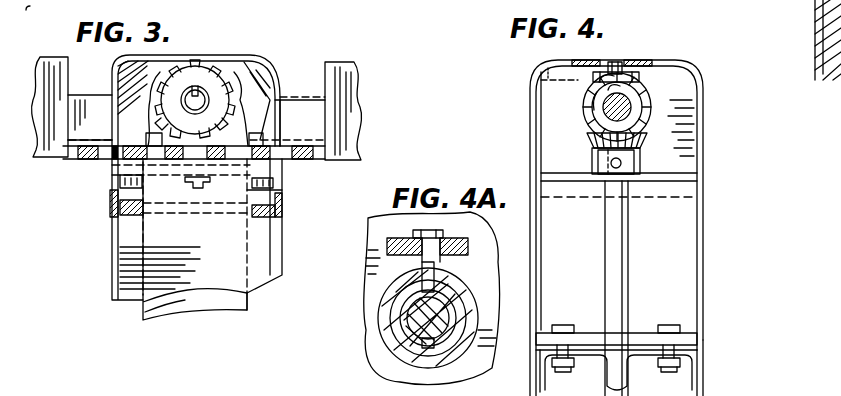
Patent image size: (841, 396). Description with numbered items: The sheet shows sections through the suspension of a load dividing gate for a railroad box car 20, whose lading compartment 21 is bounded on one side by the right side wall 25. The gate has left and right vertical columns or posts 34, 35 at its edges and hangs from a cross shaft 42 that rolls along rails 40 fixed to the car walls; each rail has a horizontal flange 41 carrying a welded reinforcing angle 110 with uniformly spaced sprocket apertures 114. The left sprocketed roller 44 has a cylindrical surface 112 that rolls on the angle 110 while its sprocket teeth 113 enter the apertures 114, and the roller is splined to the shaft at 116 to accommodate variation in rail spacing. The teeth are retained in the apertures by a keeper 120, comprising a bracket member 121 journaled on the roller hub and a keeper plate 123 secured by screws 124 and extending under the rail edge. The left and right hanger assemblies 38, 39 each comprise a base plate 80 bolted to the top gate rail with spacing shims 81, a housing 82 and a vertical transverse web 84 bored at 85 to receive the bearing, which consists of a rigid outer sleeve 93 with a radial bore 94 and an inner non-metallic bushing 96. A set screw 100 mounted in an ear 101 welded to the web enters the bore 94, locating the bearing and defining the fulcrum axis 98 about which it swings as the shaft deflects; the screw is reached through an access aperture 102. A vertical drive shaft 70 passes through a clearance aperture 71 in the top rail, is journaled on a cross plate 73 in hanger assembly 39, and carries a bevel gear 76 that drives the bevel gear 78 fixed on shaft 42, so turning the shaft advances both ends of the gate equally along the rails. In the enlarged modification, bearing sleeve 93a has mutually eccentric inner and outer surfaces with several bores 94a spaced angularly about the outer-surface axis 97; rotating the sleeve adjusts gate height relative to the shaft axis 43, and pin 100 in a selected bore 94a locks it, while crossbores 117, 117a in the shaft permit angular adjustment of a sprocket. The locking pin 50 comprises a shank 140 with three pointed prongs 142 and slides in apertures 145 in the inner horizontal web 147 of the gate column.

In FIG. 3, the railroad box car 20 is at (37, 15).
In FIG. 4, the lading compartment 21 is at (800, 56).
In FIG. 4, the right side wall 25 is at (813, 40).
In FIG. 3, the left vertical column 34 is at (284, 262).
In FIG. 4, the right vertical column 35 is at (714, 392).
In FIG. 3, the left hanger assembly 38 is at (286, 186).
In FIG. 4, the right hanger assembly 39 is at (711, 296).
In FIG. 3, the rail 40 is at (318, 166).
In FIG. 3, the horizontal flange 41 is at (302, 142).
In FIG. 3, the cross shaft 42 is at (199, 92).
In FIG. 4A, the cross shaft 42 is at (416, 346).
In FIG. 4, the cross shaft 42 is at (606, 112).
In FIG. 4A, the shaft axis 43 is at (408, 350).
In FIG. 3, the left sprocketed roller 44 is at (197, 86).
In FIG. 3, the locking pin 50 is at (252, 300).
In FIG. 4, the vertical drive shaft 70 is at (628, 274).
In FIG. 4, the clearance aperture 71 is at (606, 370).
In FIG. 4, the cross plate 73 is at (656, 184).
In FIG. 4, the bevel gear 76 is at (642, 162).
In FIG. 4, the bevel gear 78 is at (648, 120).
In FIG. 4, the base plate 80 is at (642, 334).
In FIG. 4, the spacing shims 81 is at (704, 356).
In FIG. 3, the housing 82 is at (280, 74).
In FIG. 4, the housing 82 is at (705, 90).
In FIG. 3, the vertical transverse web 84 is at (257, 101).
In FIG. 4A, the vertical transverse web 84 is at (484, 280).
In FIG. 4, the vertical transverse web 84 is at (699, 138).
In FIG. 4A, the web bore 85 is at (438, 364).
In FIG. 4, the outer sleeve 93 is at (634, 88).
In FIG. 4A, the eccentric bearing sleeve 93a is at (448, 278).
In FIG. 4, the radial bore 94 is at (642, 102).
In FIG. 4A, the angularly spaced bores 94a is at (413, 305).
In FIG. 4A, the inner bushing 96 is at (468, 300).
In FIG. 4, the inner bushing 96 is at (592, 96).
In FIG. 4A, the outer sleeve axis 97 is at (418, 300).
In FIG. 4, the fulcrum axis 98 is at (552, 80).
In FIG. 4A, the set screw 100 is at (458, 248).
In FIG. 4, the set screw 100 is at (622, 66).
In FIG. 4A, the ear 101 is at (446, 233).
In FIG. 4, the ear 101 is at (606, 64).
In FIG. 4, the access aperture 102 is at (660, 54).
In FIG. 3, the reinforcing angle 110 is at (212, 182).
In FIG. 3, the cylindrical surface 112 is at (250, 74).
In FIG. 3, the sprocket teeth 113 is at (125, 62).
In FIG. 3, the sprocket apertures 114 is at (266, 140).
In FIG. 3, the spline 116 is at (195, 99).
In FIG. 4A, the crossbore 117 is at (470, 330).
In FIG. 4A, the crossbore 117a is at (476, 358).
In FIG. 3, the keeper 120 is at (258, 92).
In FIG. 3, the bracket member 121 is at (256, 118).
In FIG. 3, the keeper plate 123 is at (284, 177).
In FIG. 3, the screws 124 is at (195, 276).
In FIG. 3, the shank 140 is at (143, 316).
In FIG. 3, the pointed prongs 142 is at (112, 162).
In FIG. 3, the apertures 145 is at (148, 216).
In FIG. 3, the inner horizontal web 147 is at (276, 212).